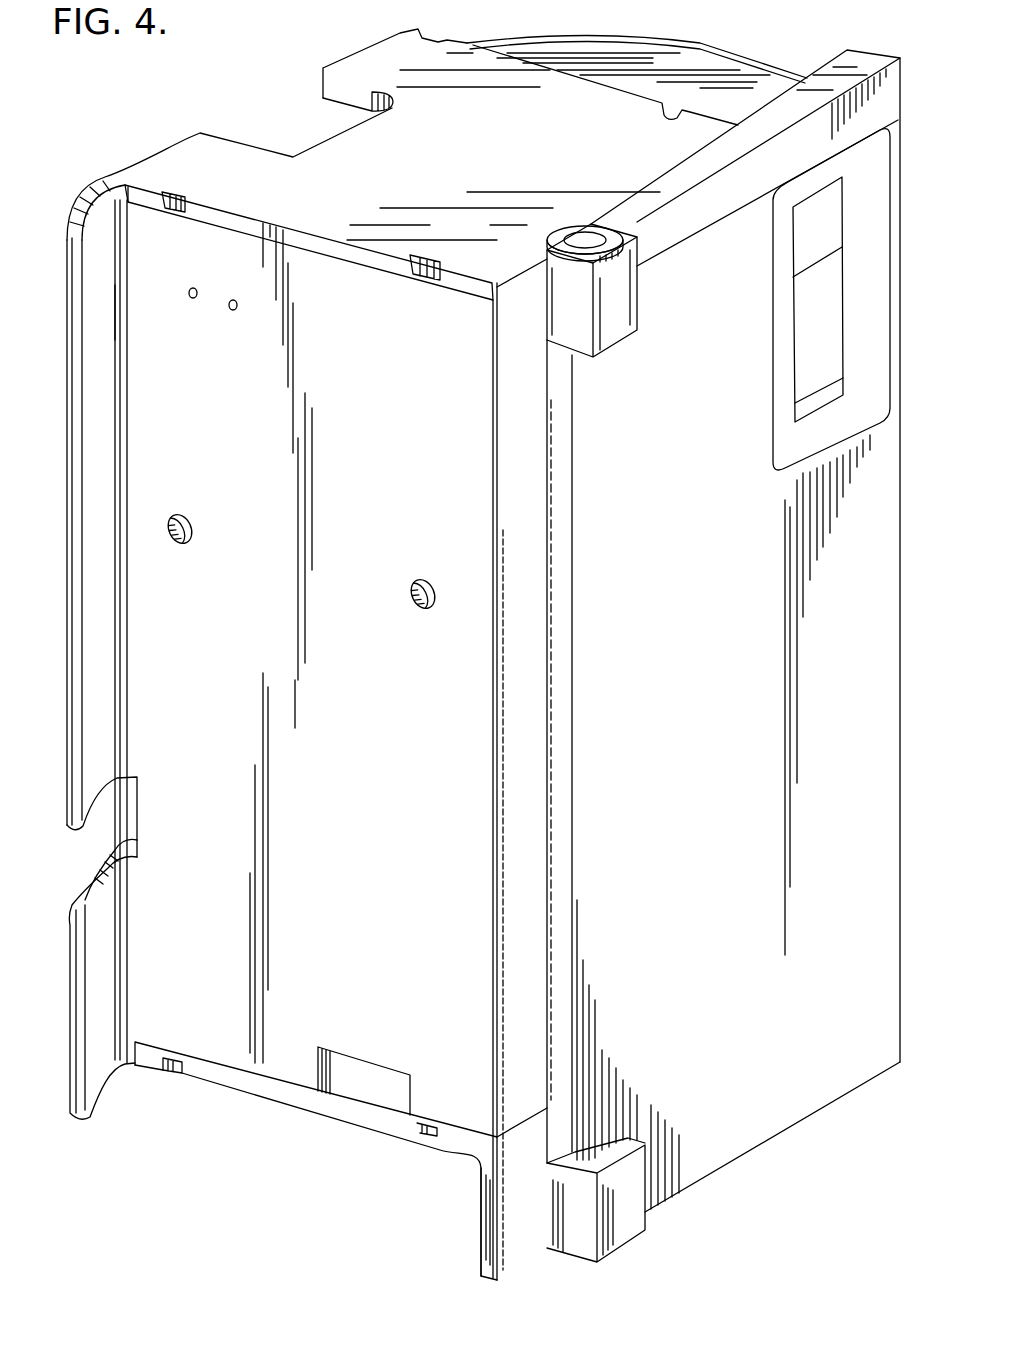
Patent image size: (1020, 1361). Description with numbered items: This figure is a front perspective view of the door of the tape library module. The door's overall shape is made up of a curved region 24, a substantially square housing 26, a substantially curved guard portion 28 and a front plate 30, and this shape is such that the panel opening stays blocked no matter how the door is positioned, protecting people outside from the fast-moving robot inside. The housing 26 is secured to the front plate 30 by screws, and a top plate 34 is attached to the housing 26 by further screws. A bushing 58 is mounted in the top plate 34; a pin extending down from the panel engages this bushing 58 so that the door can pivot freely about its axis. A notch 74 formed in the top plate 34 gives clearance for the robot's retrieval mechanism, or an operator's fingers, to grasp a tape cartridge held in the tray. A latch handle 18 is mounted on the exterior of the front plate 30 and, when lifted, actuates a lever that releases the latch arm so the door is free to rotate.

The latch handle 18 is at (813, 350).
The curved region 24 is at (68, 220).
The housing 26 is at (180, 297).
The guard portion 28 is at (703, 42).
The front plate 30 is at (873, 57).
The top plate 34 is at (485, 103).
The bushing 58 is at (573, 230).
The notch 74 is at (317, 133).